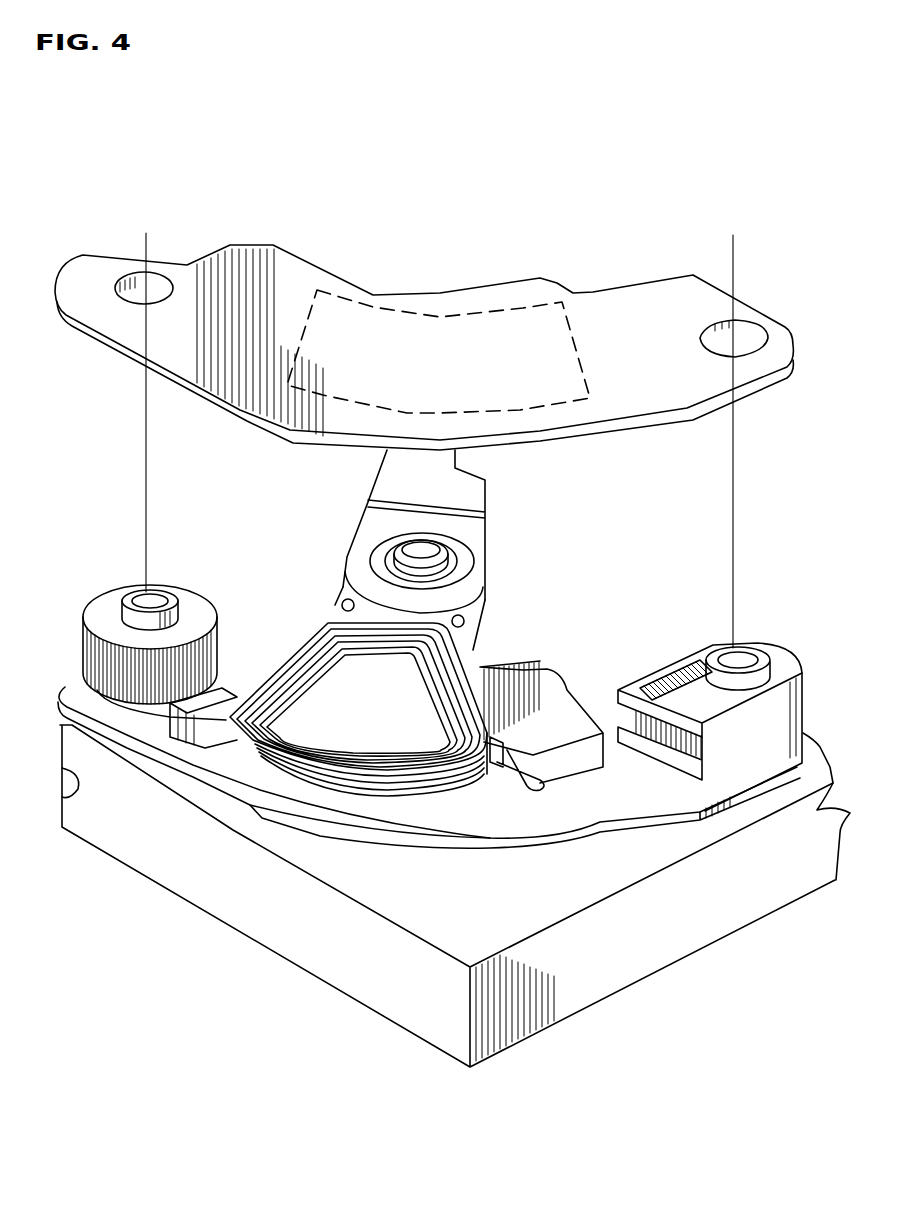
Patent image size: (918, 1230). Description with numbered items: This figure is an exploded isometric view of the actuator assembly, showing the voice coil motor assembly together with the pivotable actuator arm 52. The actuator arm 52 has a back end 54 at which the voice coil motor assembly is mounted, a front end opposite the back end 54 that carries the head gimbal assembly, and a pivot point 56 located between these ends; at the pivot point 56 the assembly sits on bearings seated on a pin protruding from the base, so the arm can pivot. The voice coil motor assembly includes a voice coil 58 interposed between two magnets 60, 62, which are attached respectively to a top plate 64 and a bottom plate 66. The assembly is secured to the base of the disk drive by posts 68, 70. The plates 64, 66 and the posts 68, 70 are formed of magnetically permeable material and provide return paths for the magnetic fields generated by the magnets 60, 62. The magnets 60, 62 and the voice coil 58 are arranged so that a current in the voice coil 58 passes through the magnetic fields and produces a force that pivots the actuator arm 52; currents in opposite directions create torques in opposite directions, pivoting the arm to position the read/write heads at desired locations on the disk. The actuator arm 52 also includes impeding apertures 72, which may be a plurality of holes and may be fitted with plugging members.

The actuator arm 52 is at (472, 472).
The back end 54 is at (472, 655).
The pivot point 56 is at (447, 565).
The voice coil 58 is at (373, 780).
The magnet 60 is at (577, 348).
The magnet 62 is at (217, 755).
The top plate 64 is at (555, 282).
The bottom plate 66 is at (545, 840).
The post 68 is at (752, 675).
The post 70 is at (178, 618).
The impeding apertures 72 is at (466, 619).